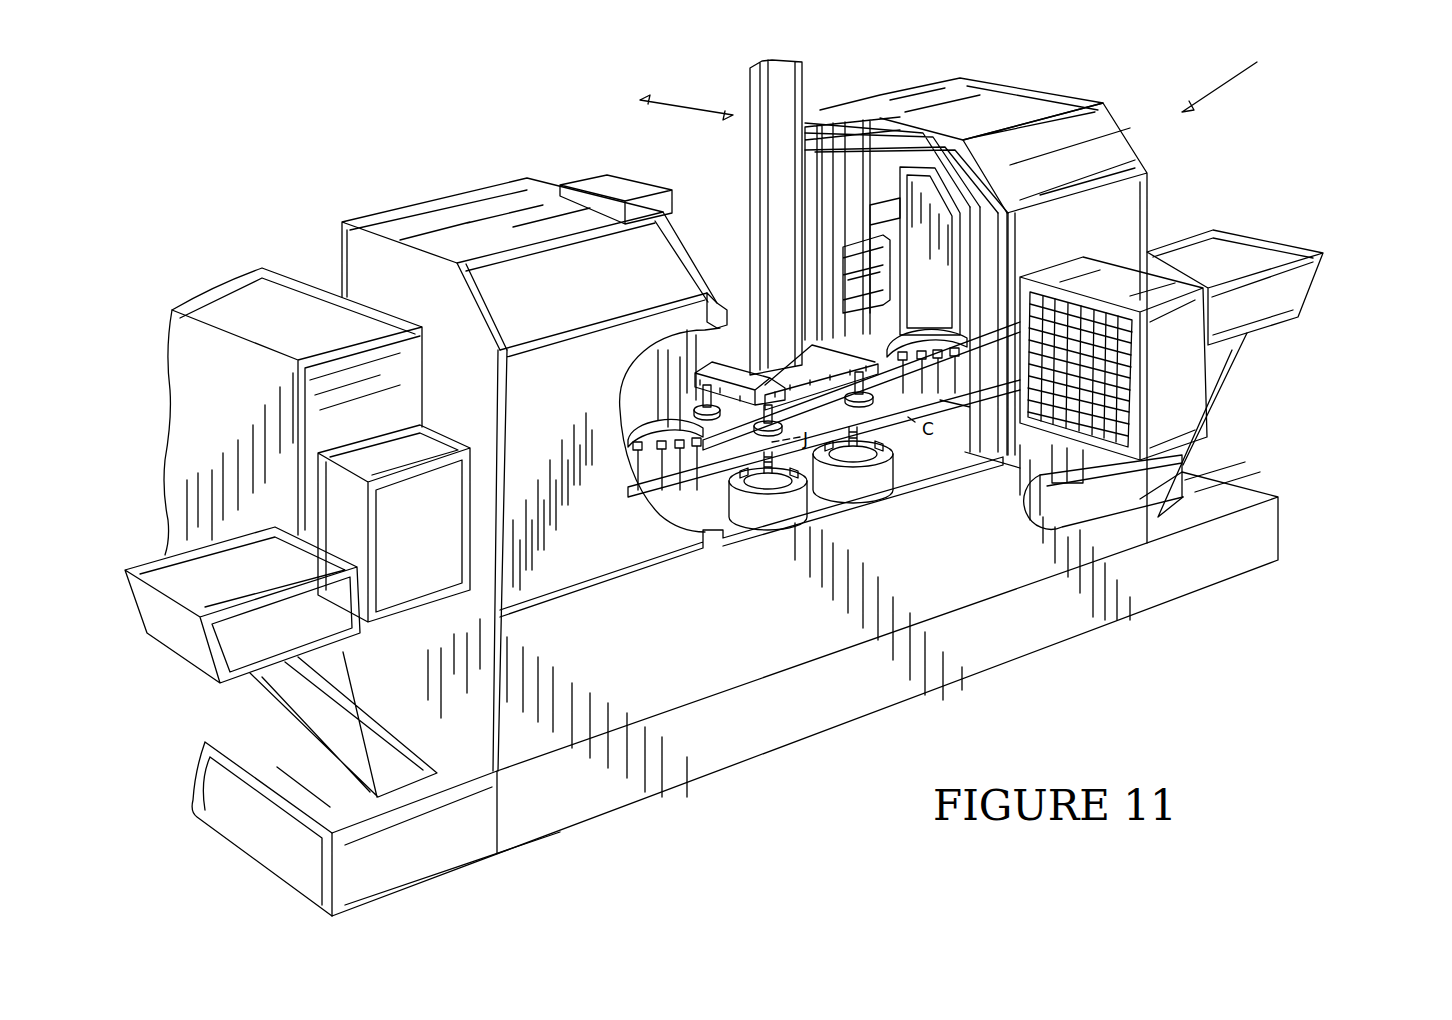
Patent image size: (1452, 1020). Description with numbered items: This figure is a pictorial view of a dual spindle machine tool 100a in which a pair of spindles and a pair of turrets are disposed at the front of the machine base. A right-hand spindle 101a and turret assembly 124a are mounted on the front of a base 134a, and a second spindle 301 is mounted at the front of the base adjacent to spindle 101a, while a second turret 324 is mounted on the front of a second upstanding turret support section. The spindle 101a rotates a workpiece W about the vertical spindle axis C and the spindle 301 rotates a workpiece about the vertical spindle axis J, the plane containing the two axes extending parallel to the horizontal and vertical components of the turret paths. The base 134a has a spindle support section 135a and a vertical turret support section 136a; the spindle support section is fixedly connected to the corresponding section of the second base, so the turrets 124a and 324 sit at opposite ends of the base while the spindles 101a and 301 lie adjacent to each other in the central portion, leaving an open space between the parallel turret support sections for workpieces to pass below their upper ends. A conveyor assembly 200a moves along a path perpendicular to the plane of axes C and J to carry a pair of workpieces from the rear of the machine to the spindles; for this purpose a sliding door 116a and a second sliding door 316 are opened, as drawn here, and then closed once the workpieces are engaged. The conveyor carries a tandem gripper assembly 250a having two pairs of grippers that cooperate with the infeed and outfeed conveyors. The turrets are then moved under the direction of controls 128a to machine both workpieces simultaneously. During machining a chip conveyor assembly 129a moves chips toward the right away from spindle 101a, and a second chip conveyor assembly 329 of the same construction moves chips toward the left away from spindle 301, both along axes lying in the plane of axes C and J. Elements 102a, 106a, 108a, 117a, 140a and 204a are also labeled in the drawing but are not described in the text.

The machine tool 100a is at (1241, 81).
The spindle 101a is at (855, 487).
The cabinet housing 102a is at (1037, 294).
The cabinet top 106a is at (1003, 100).
The cabinet side wall 108a is at (1123, 223).
The sliding door 116a is at (987, 270).
The direction of travel 117a is at (703, 157).
The turret assembly 124a is at (946, 229).
The controls 128a is at (1173, 407).
The chip conveyor assembly 129a is at (1223, 360).
The base 134a is at (912, 468).
The spindle support section 135a is at (940, 450).
The vertical turret support section 136a is at (885, 160).
The tray 140a is at (1285, 292).
The conveyor assembly 200a is at (826, 80).
The vertical column 204a is at (748, 98).
The gripper assembly 250a is at (740, 368).
The second spindle 301 is at (767, 517).
The second sliding door 316 is at (693, 267).
The second turret 324 is at (652, 383).
The second chip conveyor assembly 329 is at (383, 747).